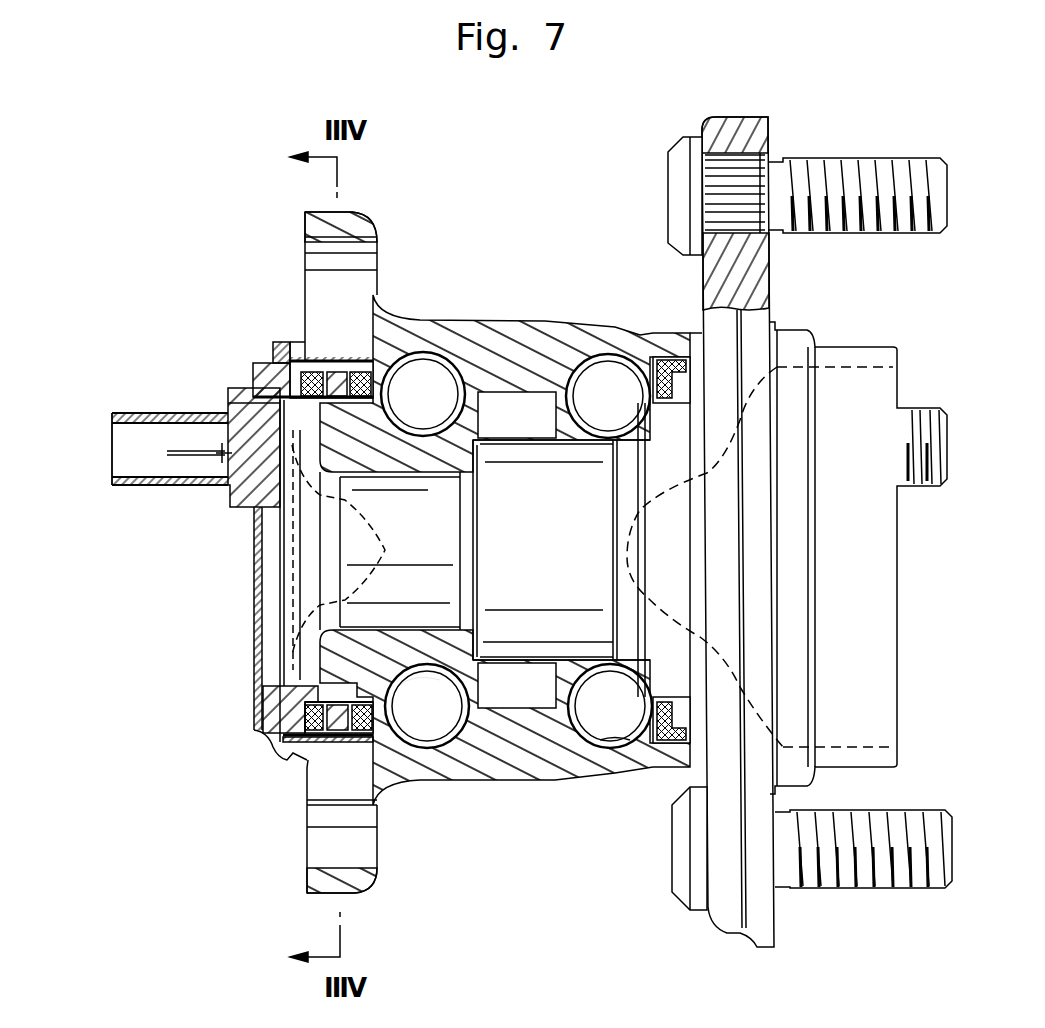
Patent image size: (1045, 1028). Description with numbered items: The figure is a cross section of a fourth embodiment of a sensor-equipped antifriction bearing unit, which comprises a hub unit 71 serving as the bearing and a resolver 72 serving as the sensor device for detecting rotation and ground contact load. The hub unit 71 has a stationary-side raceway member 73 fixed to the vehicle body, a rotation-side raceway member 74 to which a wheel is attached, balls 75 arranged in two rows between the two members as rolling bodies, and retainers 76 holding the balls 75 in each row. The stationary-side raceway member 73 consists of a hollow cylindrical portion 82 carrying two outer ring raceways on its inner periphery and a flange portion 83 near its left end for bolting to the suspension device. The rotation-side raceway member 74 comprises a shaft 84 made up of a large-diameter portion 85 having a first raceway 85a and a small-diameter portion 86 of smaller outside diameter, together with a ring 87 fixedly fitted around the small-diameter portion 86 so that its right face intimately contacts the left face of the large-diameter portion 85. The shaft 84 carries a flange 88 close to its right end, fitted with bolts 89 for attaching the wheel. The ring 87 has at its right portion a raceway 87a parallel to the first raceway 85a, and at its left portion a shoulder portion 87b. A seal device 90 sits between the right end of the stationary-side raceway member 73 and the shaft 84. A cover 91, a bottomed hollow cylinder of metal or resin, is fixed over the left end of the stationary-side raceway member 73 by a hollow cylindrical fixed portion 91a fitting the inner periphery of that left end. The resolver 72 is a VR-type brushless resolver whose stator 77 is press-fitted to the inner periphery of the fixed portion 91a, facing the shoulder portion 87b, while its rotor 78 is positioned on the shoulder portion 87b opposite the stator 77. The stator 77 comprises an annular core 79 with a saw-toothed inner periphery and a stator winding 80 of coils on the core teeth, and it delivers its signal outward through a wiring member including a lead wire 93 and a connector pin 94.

The hub unit 71 is at (504, 296).
The resolver 72 is at (290, 392).
The stationary-side raceway member 73 is at (420, 333).
The rotation-side raceway member 74 is at (533, 420).
The balls 75 is at (435, 377).
The retainers 76 is at (477, 410).
The stator 77 is at (320, 343).
The rotor 78 is at (287, 447).
The annular core 79 is at (333, 357).
The stator winding 80 is at (287, 375).
The hollow cylindrical portion 82 is at (560, 777).
The flange portion 83 is at (360, 873).
The shaft 84 is at (552, 887).
The large-diameter portion 85 is at (510, 655).
The first raceway 85a is at (627, 780).
The small-diameter portion 86 is at (390, 553).
The ring 87 is at (340, 660).
The raceway 87a is at (425, 715).
The shoulder portion 87b is at (265, 700).
The flange 88 is at (752, 277).
The bolts 89 is at (888, 165).
The seal device 90 is at (667, 368).
The cover 91 is at (253, 528).
The fixed portion 91a is at (317, 767).
The lead wire 93 is at (237, 453).
The connector pin 94 is at (172, 457).